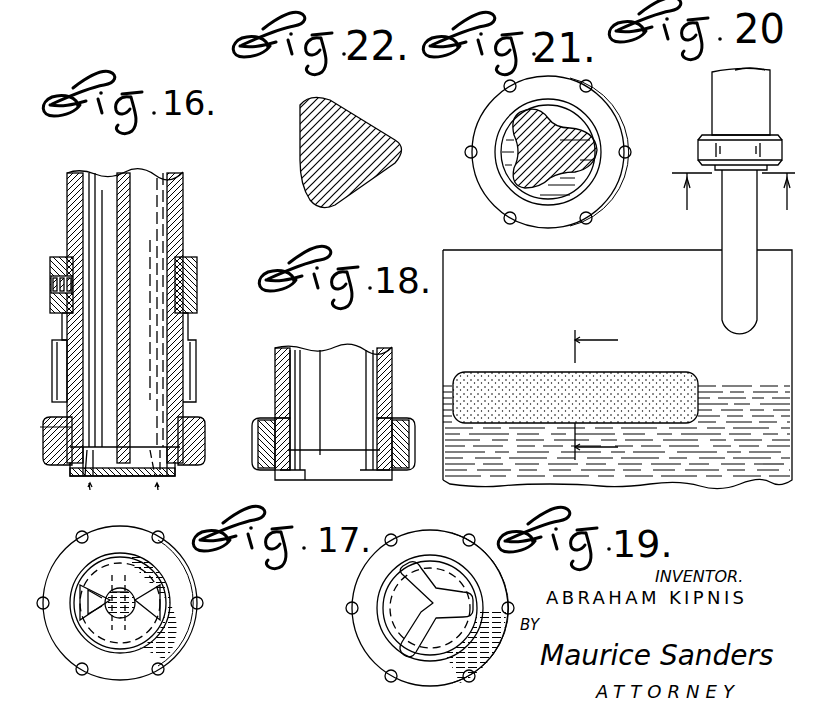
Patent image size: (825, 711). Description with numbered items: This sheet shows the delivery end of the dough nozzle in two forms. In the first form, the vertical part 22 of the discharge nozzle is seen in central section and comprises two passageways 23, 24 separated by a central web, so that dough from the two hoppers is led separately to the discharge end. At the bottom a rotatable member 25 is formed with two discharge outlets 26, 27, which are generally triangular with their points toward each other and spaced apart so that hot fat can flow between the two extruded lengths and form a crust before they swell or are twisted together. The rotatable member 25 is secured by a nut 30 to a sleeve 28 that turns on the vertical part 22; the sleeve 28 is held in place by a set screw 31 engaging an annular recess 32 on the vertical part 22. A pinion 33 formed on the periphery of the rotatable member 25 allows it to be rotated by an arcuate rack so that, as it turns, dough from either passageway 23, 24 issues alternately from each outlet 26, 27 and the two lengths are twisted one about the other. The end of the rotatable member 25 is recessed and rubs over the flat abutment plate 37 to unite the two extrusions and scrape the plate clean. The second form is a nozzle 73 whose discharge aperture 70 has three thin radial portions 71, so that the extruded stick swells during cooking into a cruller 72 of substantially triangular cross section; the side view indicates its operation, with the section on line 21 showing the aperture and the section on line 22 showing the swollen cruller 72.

In FIG. 20, the section line 21- 21 is at (736, 252).
In FIG. 16, the vertical part of the discharge nozzle 22 is at (183, 250).
In FIG. 20, the vertical part of the discharge nozzle 22 is at (609, 395).
In FIG. 16, the passageway 23 is at (89, 207).
In FIG. 16, the passageway 24 is at (157, 218).
In FIG. 16, the rotatable member 25 is at (180, 465).
In FIG. 17, the rotatable member 25 is at (182, 638).
In FIG. 16, the discharge outlet 26 is at (86, 478).
In FIG. 17, the discharge outlet 26 is at (80, 612).
In FIG. 16, the discharge outlet 27 is at (158, 478).
In FIG. 17, the discharge outlet 27 is at (155, 597).
In FIG. 16, the sleeve 28 is at (186, 339).
In FIG. 16, the nut 30 is at (43, 428).
In FIG. 17, the nut 30 is at (185, 605).
In FIG. 16, the set screw 31 is at (52, 284).
In FIG. 16, the annular recess 32 is at (64, 317).
In FIG. 16, the pinion 33 is at (55, 374).
In FIG. 16, the abutment plate 37 is at (125, 478).
In FIG. 17, the abutment plate 37 is at (112, 595).
In FIG. 21, the discharge aperture 70 is at (594, 183).
In FIG. 19, the discharge aperture 70 is at (436, 598).
In FIG. 18, the radial portion 71 is at (352, 475).
In FIG. 21, the radial portion 71 is at (515, 190).
In FIG. 19, the radial portion 71 is at (420, 572).
In FIG. 22, the cruller 72 is at (376, 178).
In FIG. 20, the cruller 72 is at (518, 380).
In FIG. 18, the nozzle 73 is at (385, 392).
In FIG. 20, the nozzle 73 is at (702, 138).